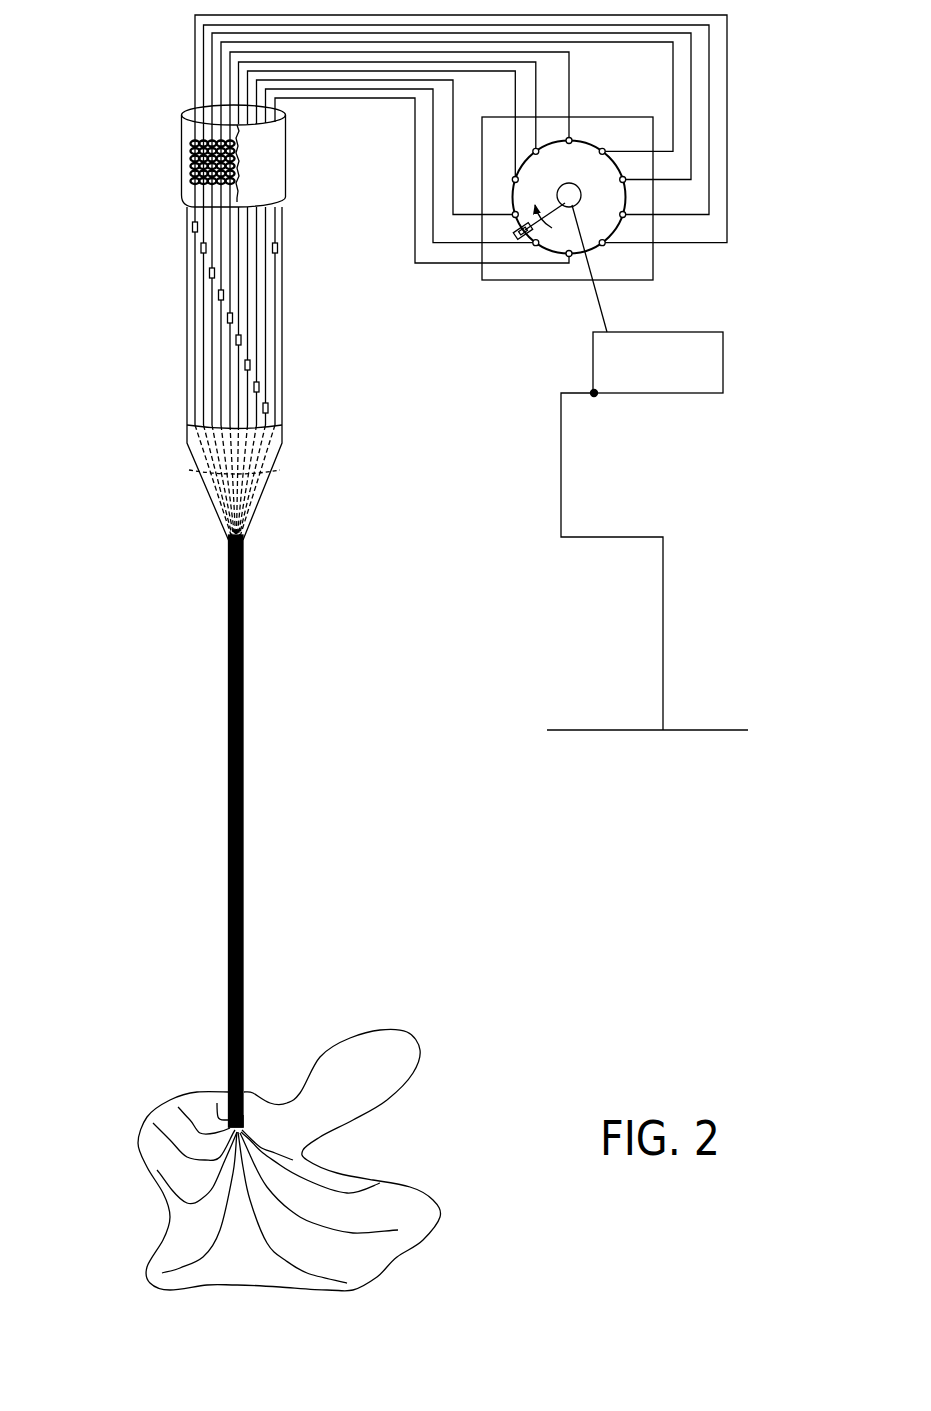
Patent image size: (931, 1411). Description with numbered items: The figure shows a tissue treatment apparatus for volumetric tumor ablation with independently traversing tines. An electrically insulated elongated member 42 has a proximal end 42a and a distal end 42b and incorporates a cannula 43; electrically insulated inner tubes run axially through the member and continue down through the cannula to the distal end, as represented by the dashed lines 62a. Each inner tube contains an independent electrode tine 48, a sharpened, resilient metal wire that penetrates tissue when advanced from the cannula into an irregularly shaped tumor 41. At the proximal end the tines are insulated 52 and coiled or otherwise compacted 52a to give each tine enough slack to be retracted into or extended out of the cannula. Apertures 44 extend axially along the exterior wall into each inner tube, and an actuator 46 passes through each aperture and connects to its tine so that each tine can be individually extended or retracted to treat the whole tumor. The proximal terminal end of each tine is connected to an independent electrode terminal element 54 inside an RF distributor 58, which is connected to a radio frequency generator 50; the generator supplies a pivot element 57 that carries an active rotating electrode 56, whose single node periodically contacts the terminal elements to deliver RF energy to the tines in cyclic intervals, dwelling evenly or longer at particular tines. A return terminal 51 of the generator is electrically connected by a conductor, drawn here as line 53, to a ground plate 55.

The tumor 41 is at (430, 1220).
The elongated member 42 is at (130, 495).
The proximal end 42a is at (177, 110).
The distal end 42b is at (230, 1097).
The cannula 43 is at (220, 705).
The apertures 44 is at (280, 305).
The actuator 46 is at (187, 225).
The electrode tine 48 is at (373, 1063).
The radio frequency generator 50 is at (732, 365).
The return terminal 51 is at (594, 402).
The insulated tines 52 is at (413, 232).
The coiled or compacted tines 52a is at (185, 162).
The return line 53 is at (670, 595).
The independent electrode terminal element 54 is at (608, 248).
The ground plate 55 is at (593, 737).
The active rotating electrode 56 is at (525, 245).
The pivot element 57 is at (566, 215).
The RF distributor 58 is at (745, 225).
The dashed lines representing inner tubes 62a is at (270, 473).